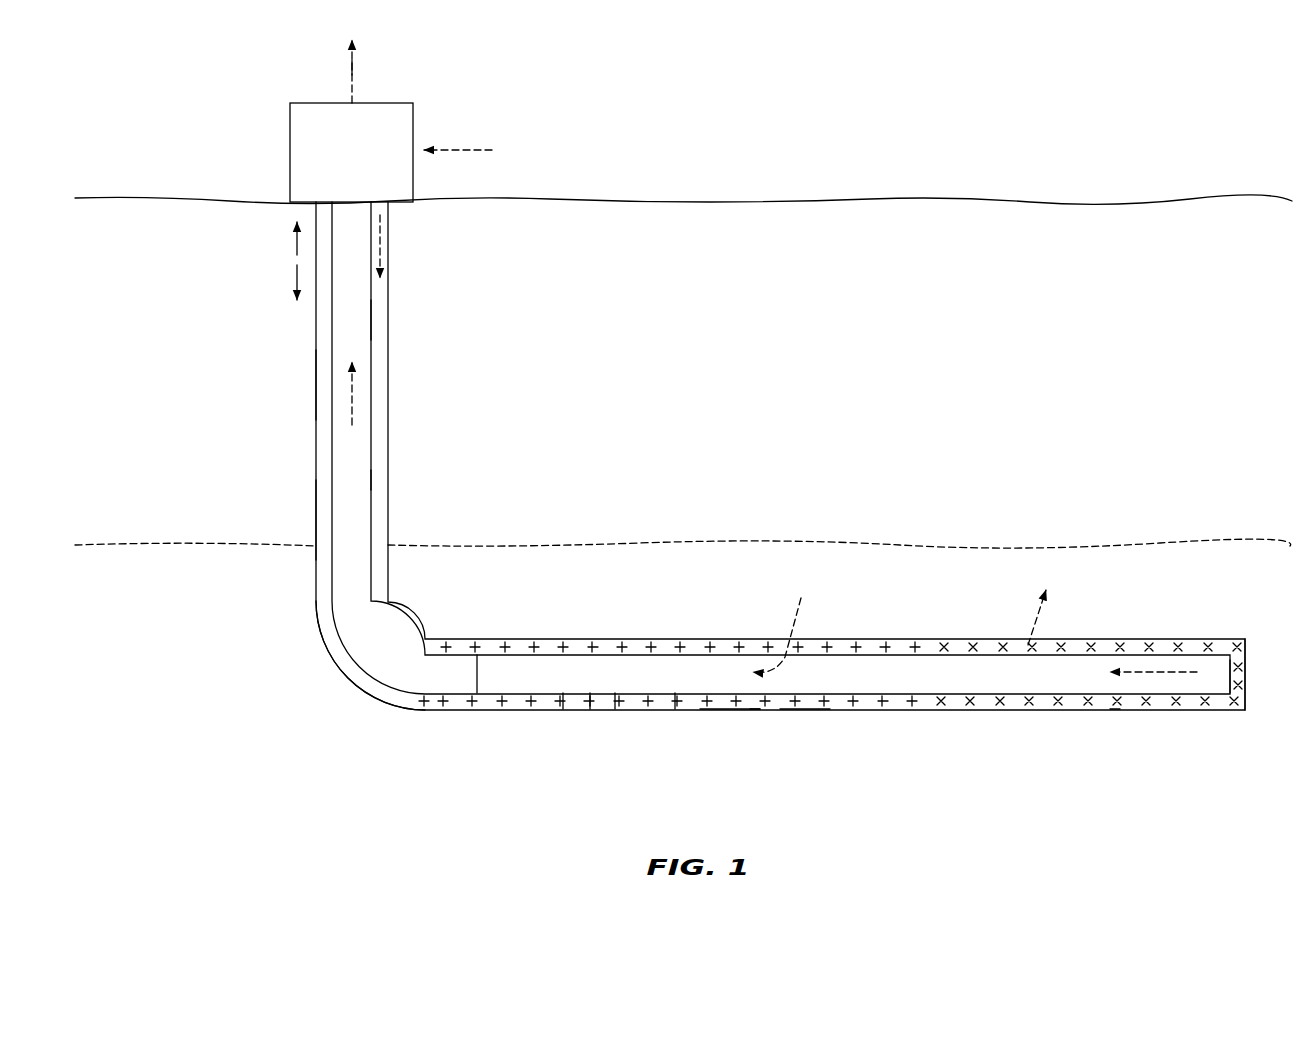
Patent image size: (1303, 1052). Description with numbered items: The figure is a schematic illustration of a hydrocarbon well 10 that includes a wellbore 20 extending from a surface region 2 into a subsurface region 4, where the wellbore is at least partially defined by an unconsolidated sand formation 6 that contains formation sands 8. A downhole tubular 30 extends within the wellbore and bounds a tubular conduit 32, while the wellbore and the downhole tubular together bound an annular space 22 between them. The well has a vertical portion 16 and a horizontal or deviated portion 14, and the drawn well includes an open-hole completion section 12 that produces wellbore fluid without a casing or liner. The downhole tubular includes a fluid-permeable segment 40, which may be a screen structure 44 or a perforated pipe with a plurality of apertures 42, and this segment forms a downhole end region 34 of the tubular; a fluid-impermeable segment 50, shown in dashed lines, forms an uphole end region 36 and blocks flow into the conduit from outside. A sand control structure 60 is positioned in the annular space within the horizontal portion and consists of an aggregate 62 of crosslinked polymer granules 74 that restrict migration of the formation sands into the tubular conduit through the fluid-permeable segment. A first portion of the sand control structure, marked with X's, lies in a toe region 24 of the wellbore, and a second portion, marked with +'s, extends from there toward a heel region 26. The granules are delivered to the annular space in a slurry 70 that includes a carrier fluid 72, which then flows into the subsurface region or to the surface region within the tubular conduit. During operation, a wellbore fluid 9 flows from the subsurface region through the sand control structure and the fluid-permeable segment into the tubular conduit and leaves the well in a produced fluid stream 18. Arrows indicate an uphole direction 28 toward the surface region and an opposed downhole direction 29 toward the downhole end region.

The surface region 2 is at (742, 135).
The subsurface region 4 is at (741, 301).
The unconsolidated sand formation 6 is at (835, 573).
The formation sands 8 is at (890, 566).
The wellbore fluid 9 is at (350, 76).
The hydrocarbon well 10 is at (258, 115).
The open-hole completion section 12 is at (723, 748).
The horizontal portion 14 is at (805, 744).
The vertical portion 16 is at (238, 392).
The produced fluid stream 18 is at (362, 60).
The wellbore 20 is at (322, 430).
The annular space 22 is at (324, 485).
The toe region 24 is at (1242, 714).
The heel region 26 is at (342, 676).
The uphole direction 28 is at (295, 243).
The downhole direction 29 is at (295, 281).
The downhole tubular 30 is at (328, 345).
The tubular conduit 32 is at (362, 319).
The downhole end region 34 is at (1245, 660).
The uphole end region 36 is at (352, 194).
The fluid-permeable segment 40 is at (517, 680).
The apertures 42 is at (567, 675).
The screen structure 44 is at (675, 675).
The fluid-impermeable segment 50 is at (367, 480).
The sand control structure 60 is at (741, 632).
The aggregate 62 is at (950, 636).
The slurry 70 is at (437, 144).
The carrier fluid 72 is at (465, 150).
The crosslinked polymer granules 74 is at (458, 152).